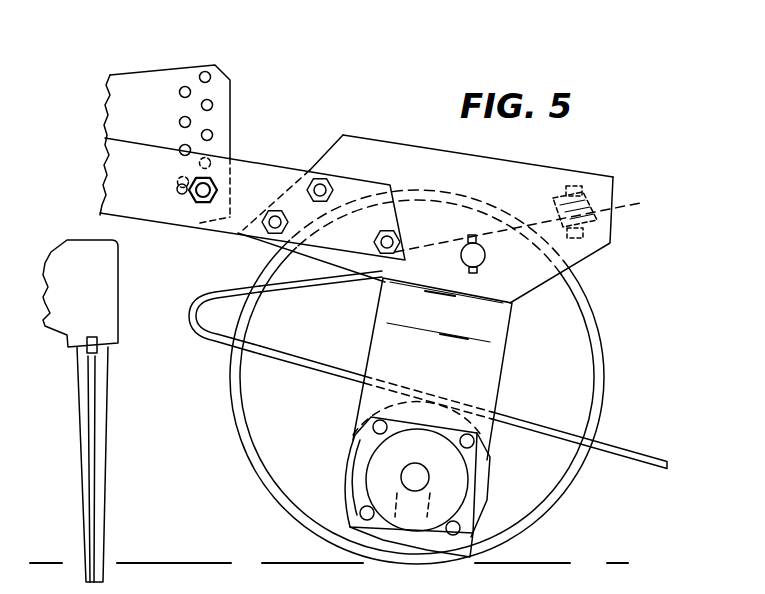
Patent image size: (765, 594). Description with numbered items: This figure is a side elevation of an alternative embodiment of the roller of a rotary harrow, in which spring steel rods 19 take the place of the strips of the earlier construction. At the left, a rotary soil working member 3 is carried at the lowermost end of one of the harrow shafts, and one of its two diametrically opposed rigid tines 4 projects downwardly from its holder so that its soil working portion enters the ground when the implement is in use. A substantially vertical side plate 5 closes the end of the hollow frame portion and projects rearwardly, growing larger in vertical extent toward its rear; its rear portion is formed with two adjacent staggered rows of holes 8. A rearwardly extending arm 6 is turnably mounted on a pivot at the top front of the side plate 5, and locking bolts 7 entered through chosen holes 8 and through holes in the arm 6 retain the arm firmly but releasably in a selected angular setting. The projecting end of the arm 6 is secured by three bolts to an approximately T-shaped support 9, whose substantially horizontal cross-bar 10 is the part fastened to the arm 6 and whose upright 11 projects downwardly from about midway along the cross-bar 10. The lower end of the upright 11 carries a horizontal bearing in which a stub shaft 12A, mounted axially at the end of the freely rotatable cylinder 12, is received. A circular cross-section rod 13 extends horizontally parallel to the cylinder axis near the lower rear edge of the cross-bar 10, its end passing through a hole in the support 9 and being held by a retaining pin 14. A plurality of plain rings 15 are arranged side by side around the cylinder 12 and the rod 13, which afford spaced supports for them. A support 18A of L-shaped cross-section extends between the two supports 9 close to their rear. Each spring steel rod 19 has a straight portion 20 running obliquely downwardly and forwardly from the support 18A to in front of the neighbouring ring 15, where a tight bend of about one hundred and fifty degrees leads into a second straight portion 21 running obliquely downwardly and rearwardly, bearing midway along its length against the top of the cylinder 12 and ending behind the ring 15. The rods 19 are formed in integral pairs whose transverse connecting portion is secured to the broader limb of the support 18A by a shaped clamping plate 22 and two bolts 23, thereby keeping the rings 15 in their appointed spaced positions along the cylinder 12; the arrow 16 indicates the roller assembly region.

The soil working member 3 is at (128, 279).
The tines 4 is at (104, 455).
The side plates 5 is at (150, 77).
The arm 6 is at (248, 162).
The locking bolts 7 is at (214, 186).
The holes 8 is at (212, 130).
The support 9 is at (373, 131).
The cross-bar 10 is at (356, 148).
The upright 11 is at (483, 372).
The cylinder 12 is at (340, 460).
The stub shafts 12A is at (427, 451).
The rod 13 is at (486, 255).
The retaining pins 14 is at (473, 232).
The plain rings 15 is at (598, 383).
The wheel 16 is at (606, 326).
The support 18A is at (620, 210).
The spring steel rods 19 is at (220, 290).
The straight portion 20 is at (322, 274).
The second straight portion 21 is at (640, 436).
The clamping plate 22 is at (551, 203).
The bolts 23 is at (573, 183).